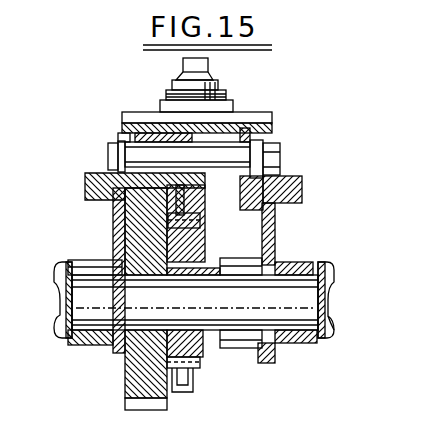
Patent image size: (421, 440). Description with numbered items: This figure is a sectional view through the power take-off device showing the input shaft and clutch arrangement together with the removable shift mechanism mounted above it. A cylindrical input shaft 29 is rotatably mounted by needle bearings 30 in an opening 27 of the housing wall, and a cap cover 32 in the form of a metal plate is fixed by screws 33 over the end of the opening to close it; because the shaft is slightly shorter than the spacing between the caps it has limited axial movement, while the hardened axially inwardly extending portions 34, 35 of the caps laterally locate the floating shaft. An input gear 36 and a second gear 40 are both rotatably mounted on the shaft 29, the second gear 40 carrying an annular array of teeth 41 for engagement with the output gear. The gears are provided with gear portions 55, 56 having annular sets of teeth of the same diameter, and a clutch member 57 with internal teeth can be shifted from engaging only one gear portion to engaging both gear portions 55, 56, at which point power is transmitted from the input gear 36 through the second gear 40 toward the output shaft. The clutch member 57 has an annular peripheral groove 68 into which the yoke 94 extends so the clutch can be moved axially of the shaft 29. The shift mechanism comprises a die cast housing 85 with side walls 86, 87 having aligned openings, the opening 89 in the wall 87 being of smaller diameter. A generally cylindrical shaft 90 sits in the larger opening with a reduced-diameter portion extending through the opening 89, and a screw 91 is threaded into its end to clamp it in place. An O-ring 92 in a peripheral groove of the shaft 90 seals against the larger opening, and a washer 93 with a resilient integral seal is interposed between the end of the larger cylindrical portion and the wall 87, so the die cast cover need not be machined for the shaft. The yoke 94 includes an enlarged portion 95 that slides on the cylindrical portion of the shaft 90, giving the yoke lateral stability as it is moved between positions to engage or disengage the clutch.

The opening 27 is at (87, 272).
The input shaft 29 is at (195, 302).
The needle bearings 30 is at (300, 335).
The cap cover 32 is at (324, 318).
The screws 33 is at (331, 272).
The axially inwardly extending portion 34 is at (60, 305).
The axially inwardly extending portion 35 is at (327, 308).
The input gear 36 is at (130, 385).
The second gear 40 is at (235, 330).
The teeth 41 is at (263, 355).
The gear portion 55 is at (130, 360).
The gear portion 56 is at (200, 360).
The clutch member 57 is at (196, 226).
The annular peripheral groove 68 is at (187, 393).
The die cast housing 85 is at (76, 164).
The side wall 86 is at (128, 128).
The side wall 87 is at (254, 128).
The opening 89 is at (275, 205).
The shaft 90 is at (110, 153).
The screw 91 is at (281, 157).
The O-ring 92 is at (122, 132).
The washer 93 is at (247, 140).
The yoke 94 is at (186, 193).
The enlarged portion 95 is at (146, 133).